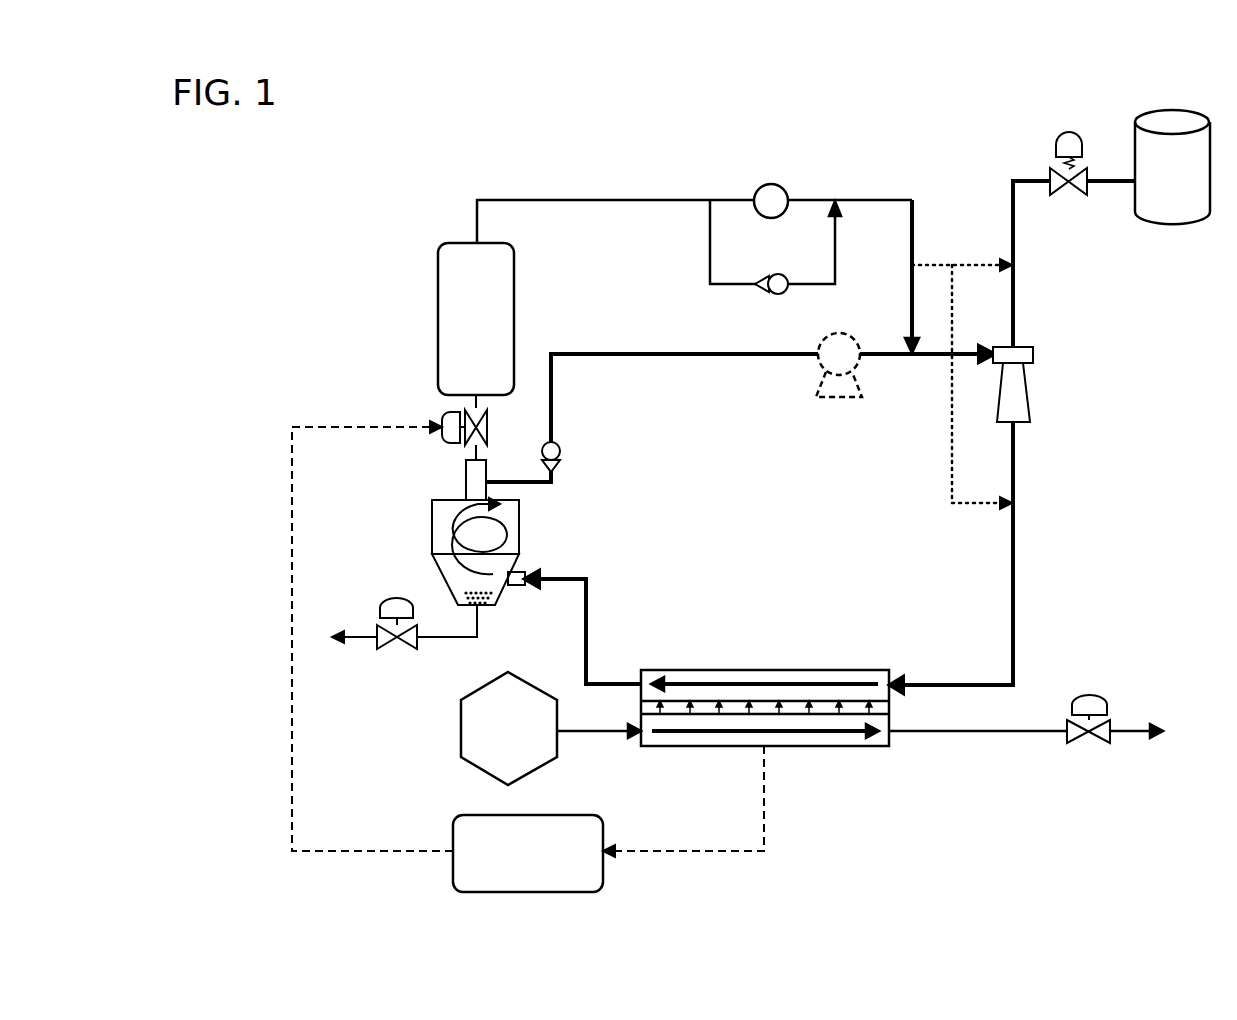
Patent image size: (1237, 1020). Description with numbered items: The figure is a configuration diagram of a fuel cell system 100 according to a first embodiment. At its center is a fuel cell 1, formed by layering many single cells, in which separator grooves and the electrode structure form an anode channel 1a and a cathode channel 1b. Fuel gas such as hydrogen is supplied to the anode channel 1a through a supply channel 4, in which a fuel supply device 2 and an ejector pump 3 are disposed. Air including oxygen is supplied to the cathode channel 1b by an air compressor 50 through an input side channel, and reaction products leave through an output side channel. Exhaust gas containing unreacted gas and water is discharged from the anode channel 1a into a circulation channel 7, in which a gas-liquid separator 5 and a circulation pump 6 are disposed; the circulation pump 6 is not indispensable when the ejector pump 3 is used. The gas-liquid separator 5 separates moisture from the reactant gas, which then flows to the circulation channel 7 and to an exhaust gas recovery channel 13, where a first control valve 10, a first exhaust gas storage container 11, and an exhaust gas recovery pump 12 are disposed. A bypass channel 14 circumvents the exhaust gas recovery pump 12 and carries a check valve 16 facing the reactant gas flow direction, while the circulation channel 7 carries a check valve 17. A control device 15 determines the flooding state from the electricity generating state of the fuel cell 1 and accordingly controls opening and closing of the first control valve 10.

The fuel cell system 100 is at (350, 166).
The fuel cell 1 is at (902, 716).
The anode channel 1a is at (850, 677).
The cathode channel 1b is at (703, 743).
The fuel supply device 2 is at (1206, 100).
The ejector pump 3 is at (1035, 353).
The supply channel 4 is at (1016, 560).
The gas-liquid separator 5 is at (440, 498).
The circulation pump 6 is at (823, 367).
The circulation channel 7 is at (709, 357).
The first control valve 10 is at (443, 421).
The first exhaust gas storage container 11 is at (438, 342).
The exhaust gas recovery pump 12 is at (784, 189).
The exhaust gas recovery channel 13 is at (578, 200).
The bypass channel 14 is at (708, 214).
The control device 15 is at (567, 815).
The check valve 16 is at (784, 276).
The check valve 17 is at (560, 447).
The air compressor 50 is at (525, 675).